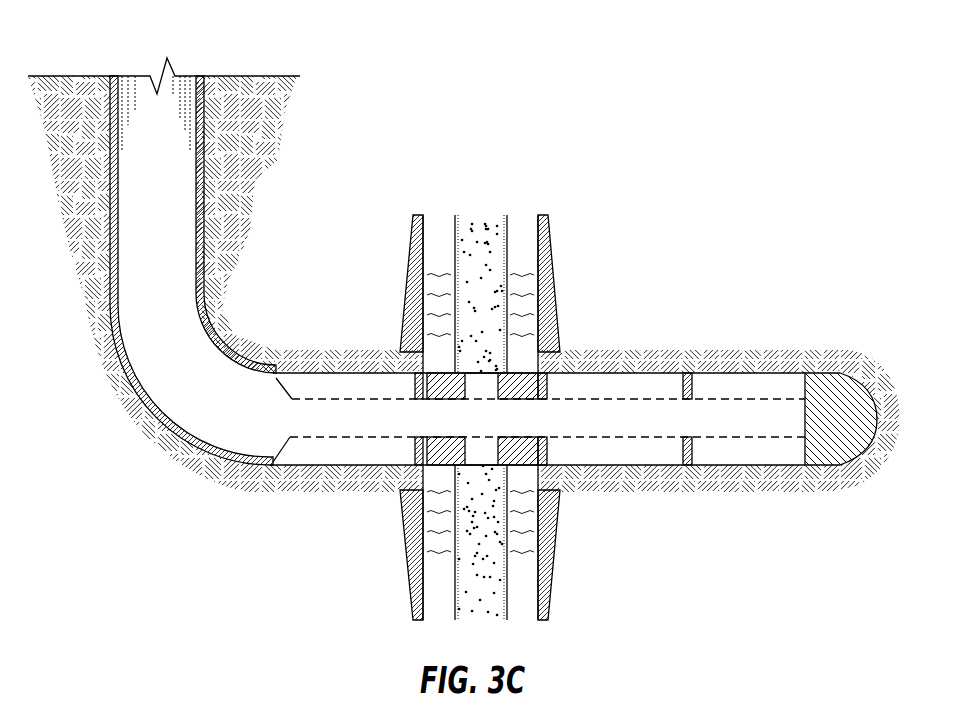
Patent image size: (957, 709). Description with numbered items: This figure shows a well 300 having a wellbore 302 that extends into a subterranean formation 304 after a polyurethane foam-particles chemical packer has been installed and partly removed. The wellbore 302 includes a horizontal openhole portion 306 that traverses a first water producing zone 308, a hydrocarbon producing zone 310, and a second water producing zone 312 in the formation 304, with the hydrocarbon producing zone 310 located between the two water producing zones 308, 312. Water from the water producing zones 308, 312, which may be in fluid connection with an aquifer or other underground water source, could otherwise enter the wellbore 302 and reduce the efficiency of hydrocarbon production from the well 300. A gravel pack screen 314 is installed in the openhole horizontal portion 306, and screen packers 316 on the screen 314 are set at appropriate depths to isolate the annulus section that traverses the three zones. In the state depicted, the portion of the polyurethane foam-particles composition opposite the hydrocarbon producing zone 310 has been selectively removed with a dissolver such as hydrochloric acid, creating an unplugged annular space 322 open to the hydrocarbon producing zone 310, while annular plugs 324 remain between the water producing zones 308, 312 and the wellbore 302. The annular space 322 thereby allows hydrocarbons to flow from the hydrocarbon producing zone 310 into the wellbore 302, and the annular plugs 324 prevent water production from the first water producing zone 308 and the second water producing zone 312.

The well 300 is at (712, 66).
The wellbore 302 is at (146, 92).
The subterranean formation 304 is at (261, 155).
The horizontal openhole portion 306 is at (297, 370).
The first water producing zone 308 is at (437, 226).
The hydrocarbon producing zone 310 is at (479, 612).
The second water producing zone 312 is at (526, 226).
The gravel pack screen 314 is at (740, 398).
The screen packers 316 is at (520, 455).
The annular space 322 is at (482, 380).
The annular plugs 324 is at (443, 382).